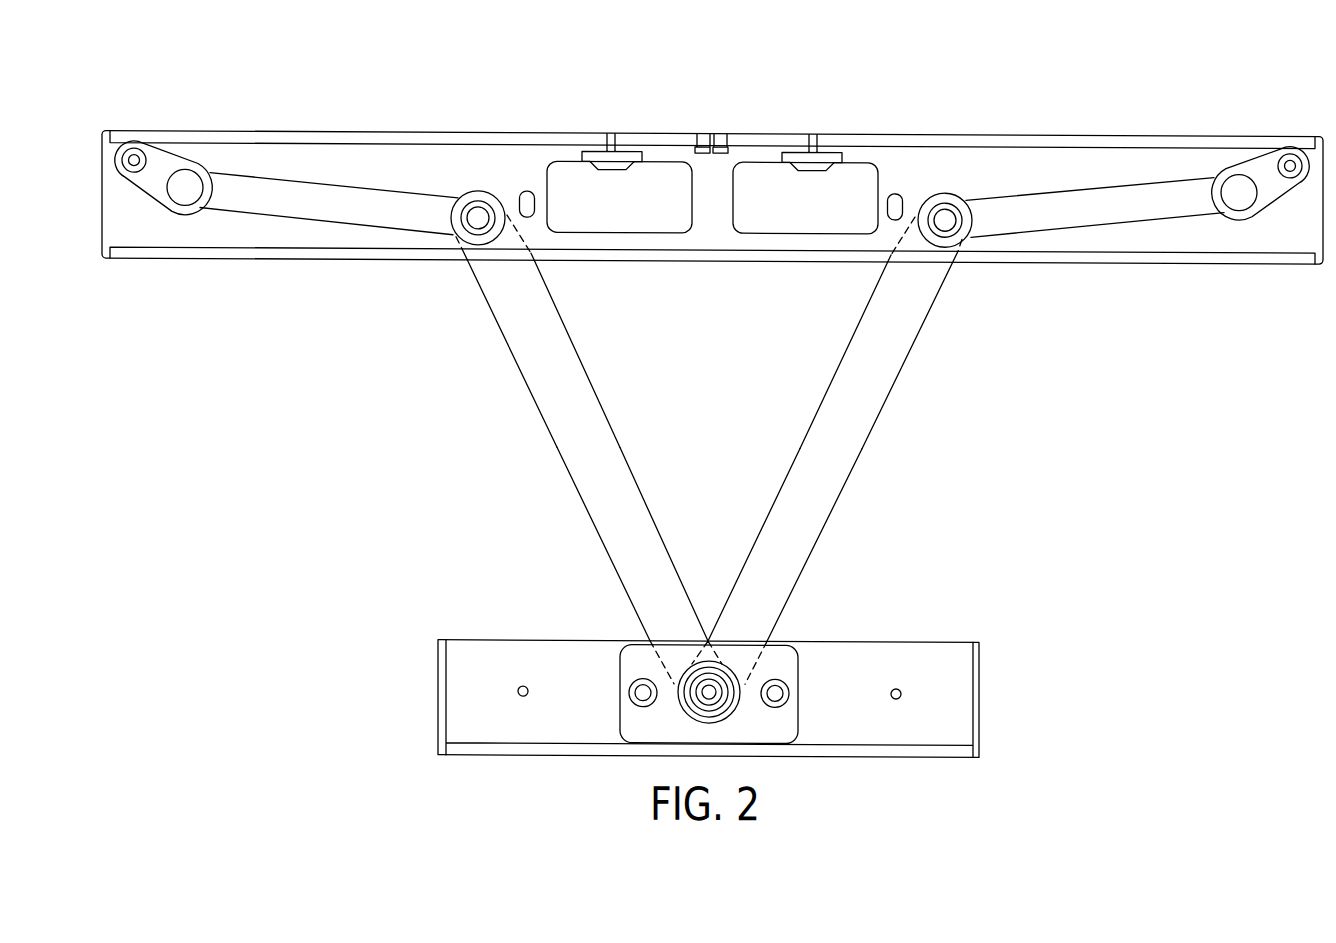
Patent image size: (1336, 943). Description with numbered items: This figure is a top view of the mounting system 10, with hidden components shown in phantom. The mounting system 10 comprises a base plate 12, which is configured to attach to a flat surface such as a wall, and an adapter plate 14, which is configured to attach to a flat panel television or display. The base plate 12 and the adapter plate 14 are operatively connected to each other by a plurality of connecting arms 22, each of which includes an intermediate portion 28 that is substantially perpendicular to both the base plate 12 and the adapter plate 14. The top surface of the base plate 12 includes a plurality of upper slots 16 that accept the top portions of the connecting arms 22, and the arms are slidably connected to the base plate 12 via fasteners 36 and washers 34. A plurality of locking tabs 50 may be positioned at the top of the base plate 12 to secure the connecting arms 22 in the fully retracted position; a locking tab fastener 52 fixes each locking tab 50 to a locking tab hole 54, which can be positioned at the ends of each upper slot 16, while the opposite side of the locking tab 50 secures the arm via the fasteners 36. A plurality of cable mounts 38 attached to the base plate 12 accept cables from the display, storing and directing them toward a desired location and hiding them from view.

The mounting system 10 is at (776, 91).
The base plate 12 is at (1020, 166).
The adapter plate 14 is at (945, 704).
The upper slots 16 is at (332, 194).
The connecting arms 22 is at (517, 308).
The intermediate portion 28 is at (603, 469).
The washers 34 is at (483, 203).
The fasteners 36 is at (470, 193).
The cable mounts 38 is at (744, 150).
The locking tabs 50 is at (165, 155).
The locking tab fastener 52 is at (134, 151).
The locking tab hole 54 is at (528, 192).